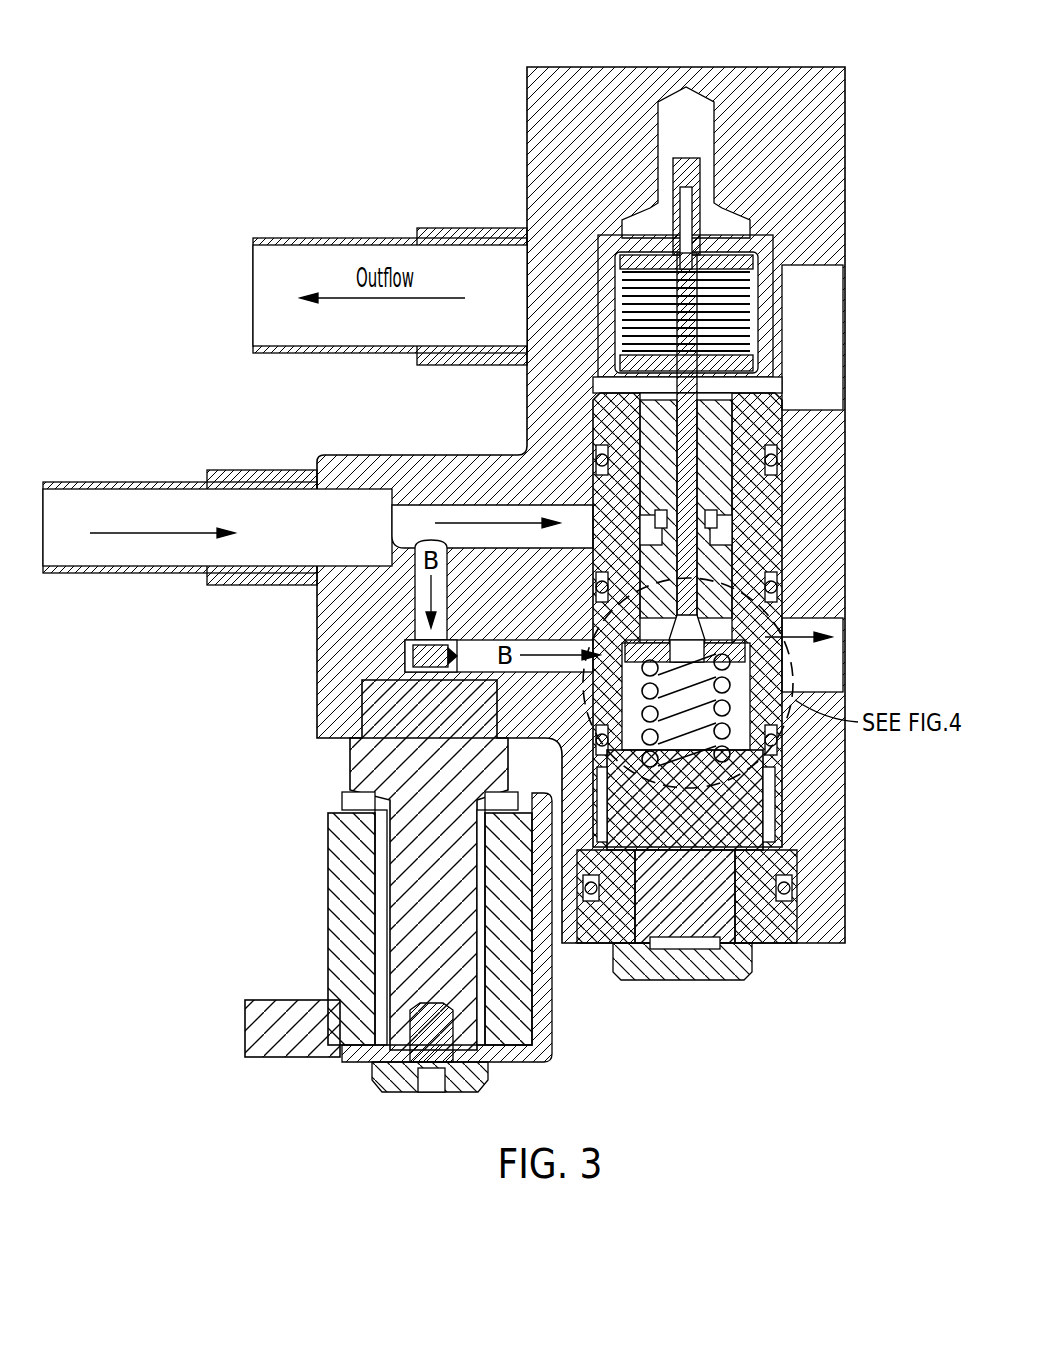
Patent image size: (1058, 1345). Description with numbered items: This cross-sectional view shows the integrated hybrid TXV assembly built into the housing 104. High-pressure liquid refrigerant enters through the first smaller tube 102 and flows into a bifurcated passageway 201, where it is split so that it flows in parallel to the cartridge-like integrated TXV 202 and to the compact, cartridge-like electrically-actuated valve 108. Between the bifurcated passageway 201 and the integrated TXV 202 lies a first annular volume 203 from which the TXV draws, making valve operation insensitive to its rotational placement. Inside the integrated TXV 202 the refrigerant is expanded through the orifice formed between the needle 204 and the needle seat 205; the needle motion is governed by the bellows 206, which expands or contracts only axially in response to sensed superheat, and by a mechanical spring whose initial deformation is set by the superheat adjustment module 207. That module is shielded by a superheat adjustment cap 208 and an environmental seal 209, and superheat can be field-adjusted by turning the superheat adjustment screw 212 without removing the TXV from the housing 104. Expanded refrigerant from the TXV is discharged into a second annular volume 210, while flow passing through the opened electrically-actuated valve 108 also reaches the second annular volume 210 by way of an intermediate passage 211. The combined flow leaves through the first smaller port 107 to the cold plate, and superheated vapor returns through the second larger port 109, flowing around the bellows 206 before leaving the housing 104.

The housing 104 is at (597, 78).
The first smaller tube 102 is at (147, 576).
The second larger port 109 is at (830, 320).
The first smaller port 107 is at (818, 683).
The bifurcated passageway 201 is at (427, 527).
The intermediate passage 211 is at (457, 653).
The electrically-actuated valve 108 is at (347, 762).
The bellows 206 is at (778, 262).
The first annular volume 203 is at (770, 520).
The needle seat 205 is at (708, 553).
The needle 204 is at (688, 486).
The second annular volume 210 is at (770, 607).
The integrated TXV 202 is at (768, 800).
The superheat adjustment module 207 is at (765, 798).
The environmental seal 209 is at (785, 888).
The superheat adjustment cap 208 is at (672, 943).
The superheat adjustment screw 212 is at (683, 940).